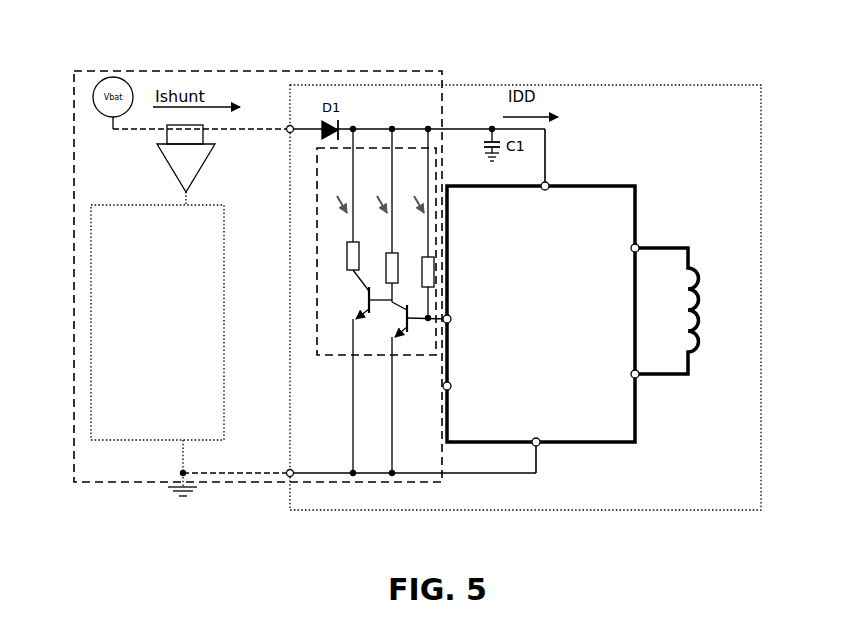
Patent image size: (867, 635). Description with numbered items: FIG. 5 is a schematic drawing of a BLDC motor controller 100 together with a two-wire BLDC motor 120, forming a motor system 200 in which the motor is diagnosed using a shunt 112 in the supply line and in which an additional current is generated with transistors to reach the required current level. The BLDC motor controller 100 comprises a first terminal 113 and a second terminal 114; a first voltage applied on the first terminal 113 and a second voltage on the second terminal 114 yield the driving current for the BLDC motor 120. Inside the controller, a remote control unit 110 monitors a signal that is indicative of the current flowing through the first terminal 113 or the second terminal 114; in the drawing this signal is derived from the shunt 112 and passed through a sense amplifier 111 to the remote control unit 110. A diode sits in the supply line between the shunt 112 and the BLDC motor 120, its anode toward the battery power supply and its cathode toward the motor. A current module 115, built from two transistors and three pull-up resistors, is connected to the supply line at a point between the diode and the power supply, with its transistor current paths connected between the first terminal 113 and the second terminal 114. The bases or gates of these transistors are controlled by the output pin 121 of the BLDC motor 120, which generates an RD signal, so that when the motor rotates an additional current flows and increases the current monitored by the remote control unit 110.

The motor drive arrangement 200 is at (105, 50).
The BLDC motor controller 100 is at (74, 354).
The remote control unit 110 is at (157, 350).
The current sense amplifier 111 is at (172, 170).
The shunt 112 is at (167, 133).
The first terminal 113 is at (288, 127).
The second terminal 114 is at (288, 470).
The current module 115 is at (317, 250).
The BLDC motor 120 is at (636, 213).
The output pin 121 is at (450, 322).